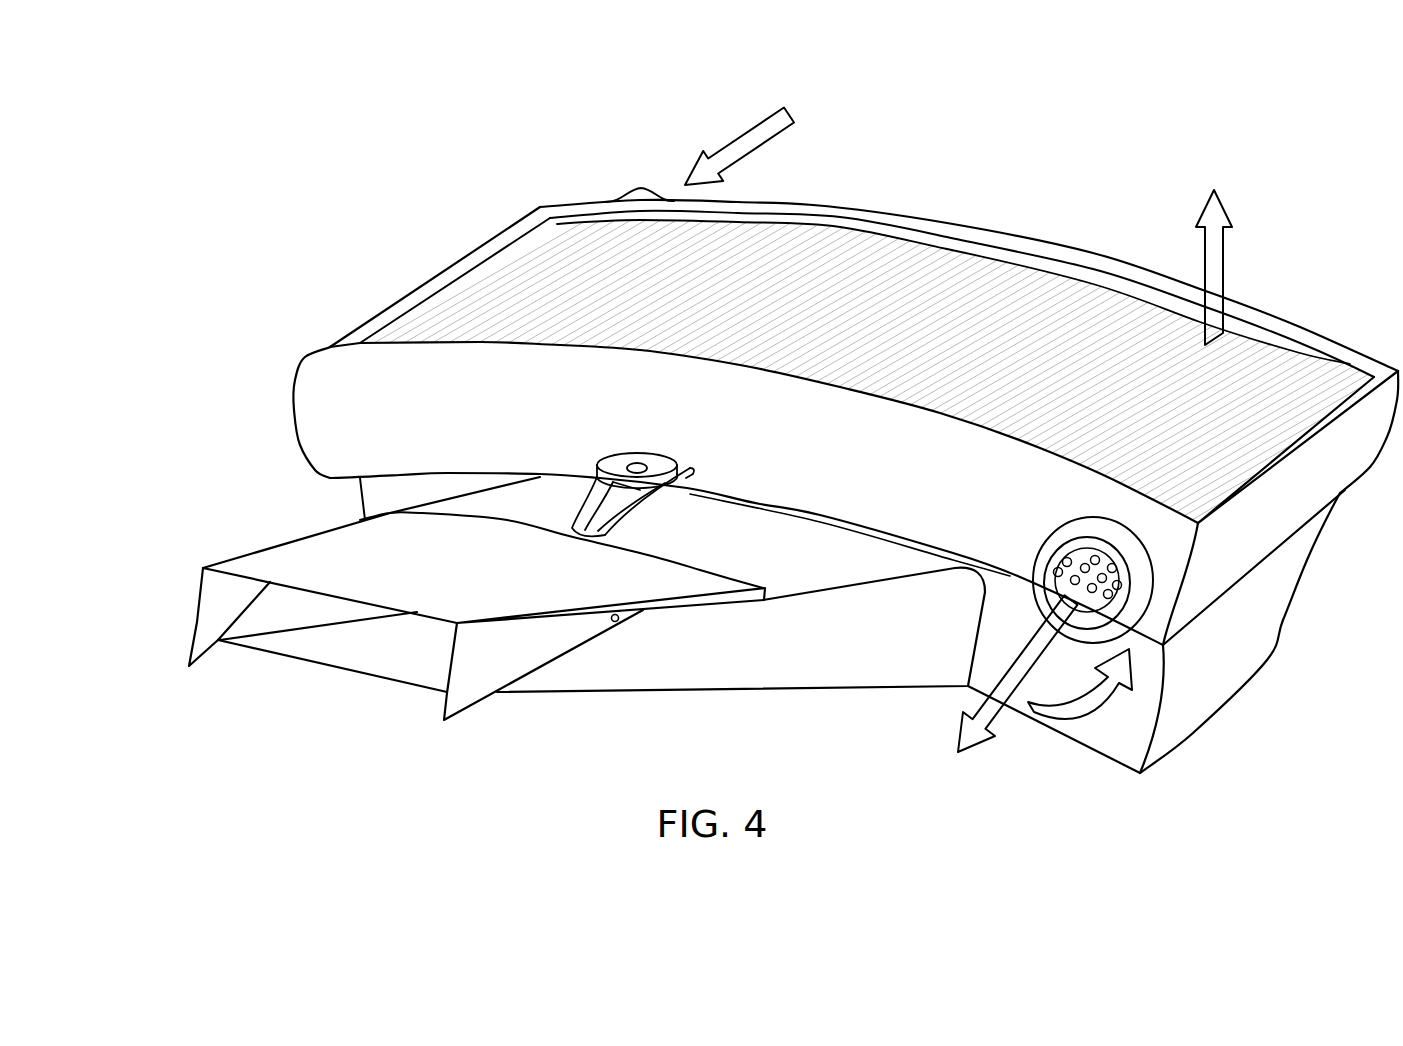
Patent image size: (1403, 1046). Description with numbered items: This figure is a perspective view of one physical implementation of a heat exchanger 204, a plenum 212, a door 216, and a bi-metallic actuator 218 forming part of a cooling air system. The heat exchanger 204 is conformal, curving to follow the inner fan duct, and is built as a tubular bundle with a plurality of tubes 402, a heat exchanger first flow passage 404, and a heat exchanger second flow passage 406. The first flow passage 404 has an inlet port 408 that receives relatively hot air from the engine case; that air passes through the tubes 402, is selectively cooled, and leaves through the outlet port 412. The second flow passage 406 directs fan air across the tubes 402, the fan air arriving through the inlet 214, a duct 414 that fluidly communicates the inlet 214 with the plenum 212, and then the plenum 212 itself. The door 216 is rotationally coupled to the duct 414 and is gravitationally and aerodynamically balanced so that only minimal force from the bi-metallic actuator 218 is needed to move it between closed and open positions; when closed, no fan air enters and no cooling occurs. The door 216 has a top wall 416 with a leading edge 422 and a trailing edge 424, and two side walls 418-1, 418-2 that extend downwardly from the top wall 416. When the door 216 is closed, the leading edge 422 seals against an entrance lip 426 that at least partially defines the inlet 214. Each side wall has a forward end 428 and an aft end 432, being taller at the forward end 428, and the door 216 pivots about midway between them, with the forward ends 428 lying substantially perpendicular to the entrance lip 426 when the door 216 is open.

The heat exchanger 204 is at (864, 261).
The plenum 212 is at (845, 558).
The inlet 214 is at (332, 674).
The door 216 is at (438, 584).
The bi-metallic actuator 218 is at (595, 454).
The tubes 402 is at (940, 270).
The heat exchanger first flow passage 404 is at (760, 122).
The heat exchanger second flow passage 406 is at (1227, 265).
The inlet port 408 is at (643, 187).
The outlet port 412 is at (1083, 568).
The duct 414 is at (805, 680).
The top wall 416 is at (465, 576).
The side wall 418-1 is at (477, 690).
The side wall 418-2 is at (212, 596).
The leading edge 422 is at (347, 593).
The trailing edge 424 is at (713, 567).
The entrance lip 426 is at (420, 687).
The forward end 428 is at (197, 622).
The aft end 432 is at (643, 613).